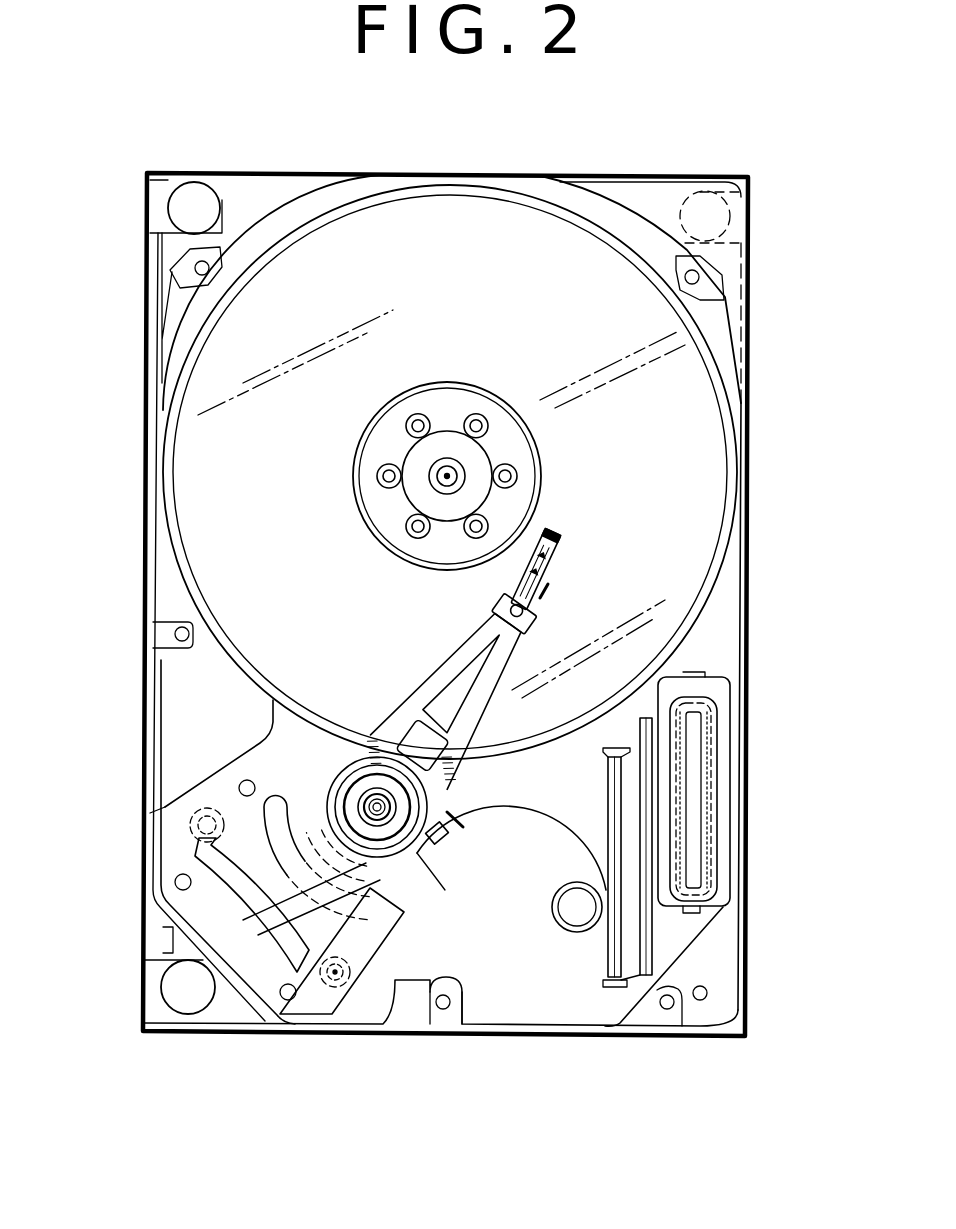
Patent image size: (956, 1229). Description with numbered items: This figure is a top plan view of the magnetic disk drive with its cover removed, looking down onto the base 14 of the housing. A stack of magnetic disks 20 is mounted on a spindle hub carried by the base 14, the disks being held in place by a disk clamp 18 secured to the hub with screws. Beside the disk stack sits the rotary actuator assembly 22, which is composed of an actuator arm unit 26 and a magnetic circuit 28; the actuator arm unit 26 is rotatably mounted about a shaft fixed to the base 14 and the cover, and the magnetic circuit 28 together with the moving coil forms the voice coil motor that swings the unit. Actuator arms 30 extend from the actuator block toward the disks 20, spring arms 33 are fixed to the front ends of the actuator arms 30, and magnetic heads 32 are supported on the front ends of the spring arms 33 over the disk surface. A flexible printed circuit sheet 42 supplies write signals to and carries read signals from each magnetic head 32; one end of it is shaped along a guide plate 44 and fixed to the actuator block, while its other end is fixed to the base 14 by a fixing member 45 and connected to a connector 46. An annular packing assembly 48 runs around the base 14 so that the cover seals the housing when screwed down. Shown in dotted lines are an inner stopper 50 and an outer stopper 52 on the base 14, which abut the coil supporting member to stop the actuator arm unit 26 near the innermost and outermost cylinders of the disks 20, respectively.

The base 14 is at (622, 187).
The disk clamp 18 is at (452, 398).
The magnetic disks 20 is at (700, 395).
The rotary actuator assembly 22 is at (305, 790).
The actuator arm unit 26 is at (373, 735).
The magnetic circuit 28 is at (220, 797).
The actuator arms 30 is at (430, 682).
The magnetic heads 32 is at (556, 534).
The spring arms 33 is at (548, 588).
The flexible printed circuit sheet 42 is at (538, 808).
The guide plate 44 is at (440, 842).
The fixing member 45 is at (610, 805).
The connector 46 is at (693, 782).
The annular packing assembly 48 is at (735, 600).
The inner stopper 50 is at (330, 990).
The outer stopper 52 is at (190, 825).